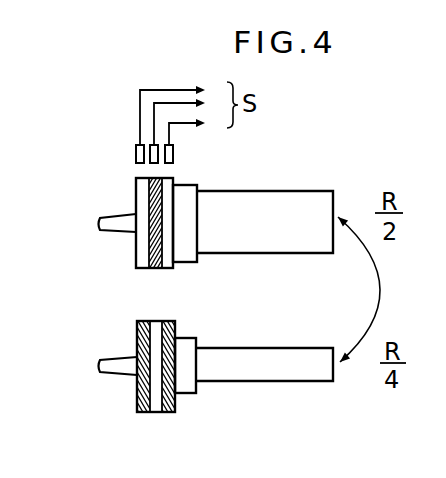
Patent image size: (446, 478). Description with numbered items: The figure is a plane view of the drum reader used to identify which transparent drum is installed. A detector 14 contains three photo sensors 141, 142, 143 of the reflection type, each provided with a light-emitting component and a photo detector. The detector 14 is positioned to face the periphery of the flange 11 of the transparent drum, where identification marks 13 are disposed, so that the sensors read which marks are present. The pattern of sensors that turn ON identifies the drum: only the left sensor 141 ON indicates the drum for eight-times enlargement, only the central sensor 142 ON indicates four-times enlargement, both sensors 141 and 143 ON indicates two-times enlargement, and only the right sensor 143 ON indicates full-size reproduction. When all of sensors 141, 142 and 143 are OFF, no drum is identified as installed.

The flange 11 is at (142, 250).
The identification marks 13 is at (157, 268).
The detector 14 is at (47, 90).
The left photo sensor 141 is at (136, 155).
The central photo sensor 142 is at (152, 145).
The right photo sensor 143 is at (167, 145).